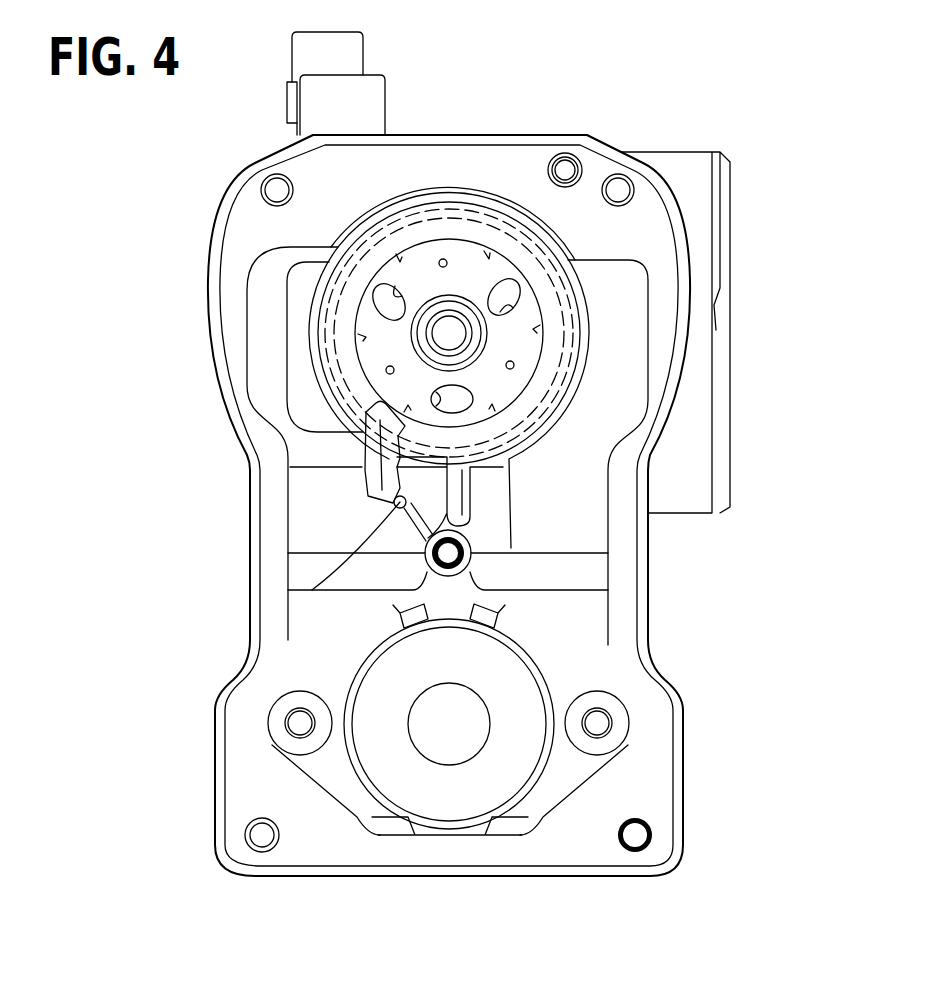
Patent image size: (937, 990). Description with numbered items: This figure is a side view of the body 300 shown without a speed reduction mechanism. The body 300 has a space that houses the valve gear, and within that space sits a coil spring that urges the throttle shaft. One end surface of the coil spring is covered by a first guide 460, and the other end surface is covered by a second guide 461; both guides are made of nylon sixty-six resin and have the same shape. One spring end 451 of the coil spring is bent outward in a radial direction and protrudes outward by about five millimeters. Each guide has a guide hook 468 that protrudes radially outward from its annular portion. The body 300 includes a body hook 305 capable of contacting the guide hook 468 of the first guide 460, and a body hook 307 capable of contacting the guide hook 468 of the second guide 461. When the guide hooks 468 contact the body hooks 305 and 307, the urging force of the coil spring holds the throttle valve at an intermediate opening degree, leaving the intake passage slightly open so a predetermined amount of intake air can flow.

The body 300 is at (648, 580).
The body hook 305 is at (398, 507).
The body hook 307 is at (373, 524).
The spring end 451 is at (368, 470).
The first guide 460 is at (537, 267).
The second guide 461 is at (470, 508).
The guide hook 468 is at (378, 495).